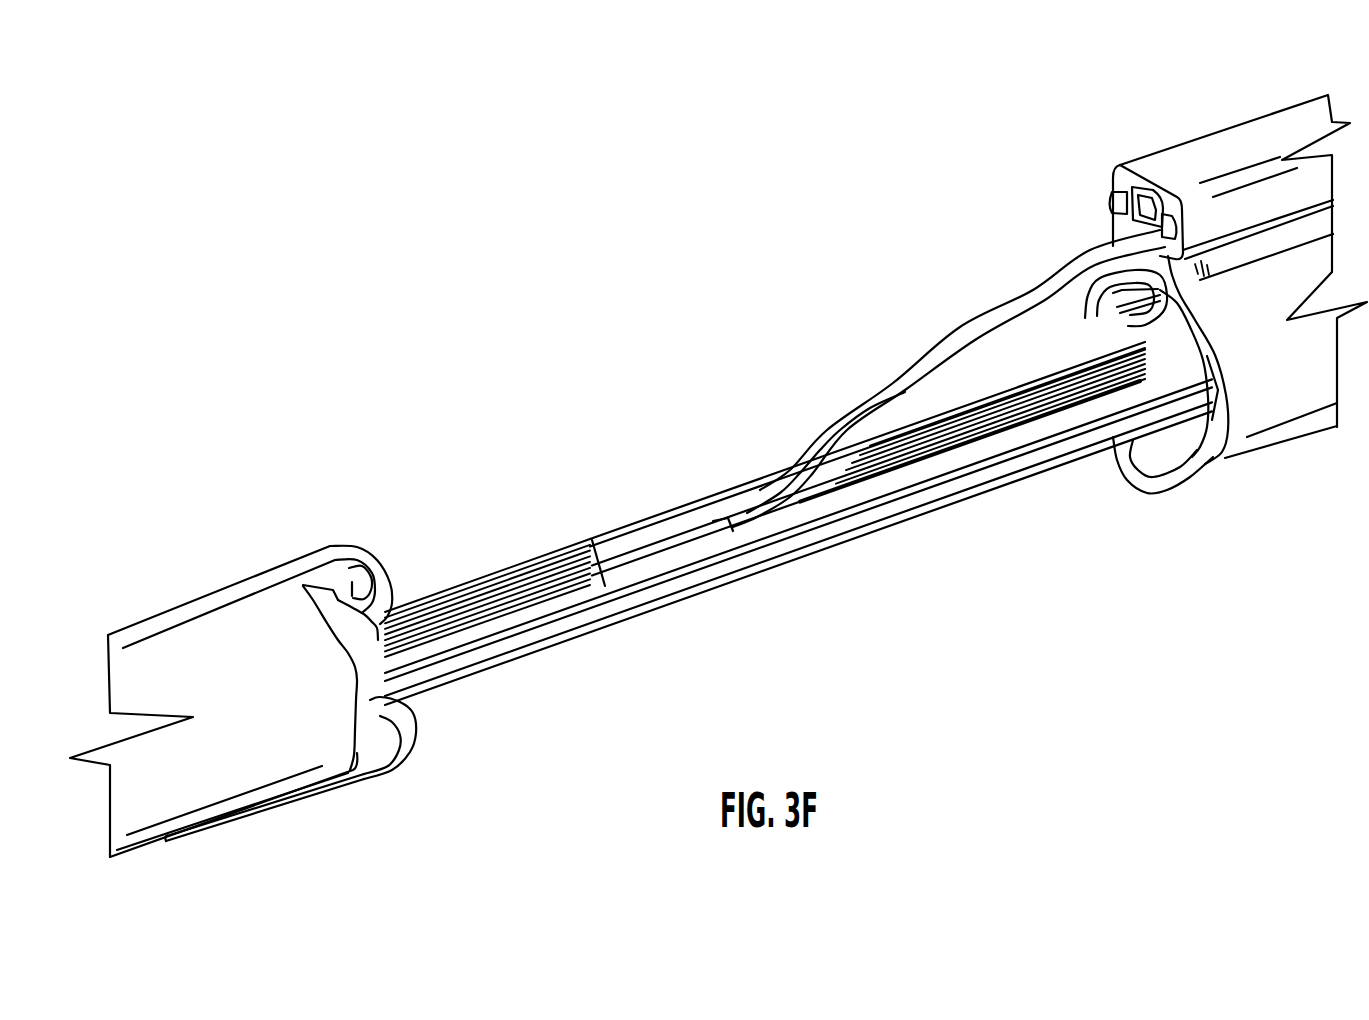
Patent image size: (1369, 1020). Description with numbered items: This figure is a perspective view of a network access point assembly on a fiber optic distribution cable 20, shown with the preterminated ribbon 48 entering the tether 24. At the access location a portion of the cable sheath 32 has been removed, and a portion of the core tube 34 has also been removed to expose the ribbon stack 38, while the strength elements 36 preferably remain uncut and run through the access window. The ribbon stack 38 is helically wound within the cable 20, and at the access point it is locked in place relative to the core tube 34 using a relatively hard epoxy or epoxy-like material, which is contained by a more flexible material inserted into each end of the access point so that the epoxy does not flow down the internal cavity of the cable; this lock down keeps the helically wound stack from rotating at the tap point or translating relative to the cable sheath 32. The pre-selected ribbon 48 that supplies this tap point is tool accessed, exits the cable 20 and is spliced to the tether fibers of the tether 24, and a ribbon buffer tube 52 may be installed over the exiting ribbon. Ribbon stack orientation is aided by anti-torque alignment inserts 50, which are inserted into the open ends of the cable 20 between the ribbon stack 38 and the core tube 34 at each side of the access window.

The distribution cable 20 is at (1268, 412).
The tether 24 is at (1197, 160).
The cable sheath 32 is at (193, 650).
The core tube 34 is at (373, 642).
The strength elements 36 is at (573, 622).
The ribbon stack 38 is at (521, 588).
The pre-selected ribbon 48 is at (700, 527).
The anti-torque alignment inserts 50 is at (357, 554).
The ribbon buffer tube 52 is at (923, 360).